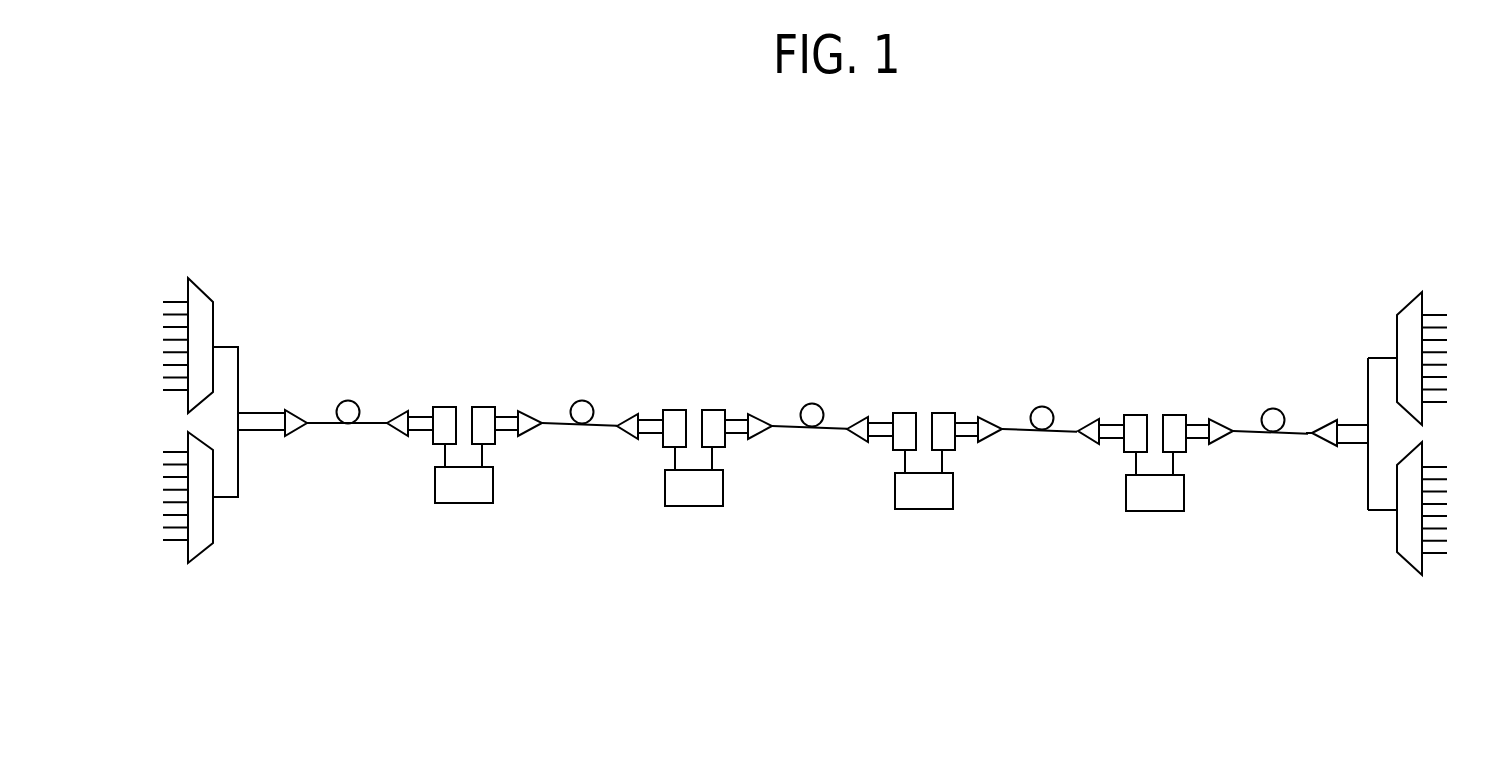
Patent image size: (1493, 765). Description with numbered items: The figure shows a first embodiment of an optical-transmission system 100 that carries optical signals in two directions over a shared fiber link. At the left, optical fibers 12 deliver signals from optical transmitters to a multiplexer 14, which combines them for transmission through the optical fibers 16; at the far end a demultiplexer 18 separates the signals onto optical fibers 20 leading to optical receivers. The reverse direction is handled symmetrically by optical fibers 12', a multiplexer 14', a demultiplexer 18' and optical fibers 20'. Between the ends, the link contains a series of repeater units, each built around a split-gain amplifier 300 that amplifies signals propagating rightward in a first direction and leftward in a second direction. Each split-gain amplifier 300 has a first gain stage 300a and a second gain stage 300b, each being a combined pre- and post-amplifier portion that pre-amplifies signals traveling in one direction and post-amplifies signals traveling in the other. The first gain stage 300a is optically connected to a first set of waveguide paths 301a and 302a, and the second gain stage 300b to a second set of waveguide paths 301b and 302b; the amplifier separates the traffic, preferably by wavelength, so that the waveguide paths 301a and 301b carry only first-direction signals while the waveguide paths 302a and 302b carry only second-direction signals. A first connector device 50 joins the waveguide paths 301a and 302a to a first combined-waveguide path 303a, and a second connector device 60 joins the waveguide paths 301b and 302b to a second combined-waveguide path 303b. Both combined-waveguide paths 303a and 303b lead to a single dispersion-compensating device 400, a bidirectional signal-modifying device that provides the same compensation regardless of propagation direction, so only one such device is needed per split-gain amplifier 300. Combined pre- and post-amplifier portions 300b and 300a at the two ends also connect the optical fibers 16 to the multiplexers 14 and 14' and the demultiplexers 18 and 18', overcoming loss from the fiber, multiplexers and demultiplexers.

The optical-transmission system 100 is at (814, 222).
The optical fiber 12 is at (170, 311).
The multiplexer 14 is at (215, 322).
The optical fiber 16 is at (349, 400).
The demultiplexer 18 is at (1383, 342).
The optical fiber 20 is at (1451, 327).
The optical fiber 12' is at (1439, 551).
The multiplexer 14' is at (1385, 538).
The demultiplexer 18' is at (216, 524).
The optical fiber 20' is at (170, 532).
The split-gain amplifier 300 is at (816, 418).
The first gain stage 300a is at (866, 377).
The second gain stage 300b is at (300, 412).
The waveguide path 301a is at (780, 404).
The waveguide path 301b is at (843, 404).
The waveguide path 302a is at (729, 453).
The waveguide path 302b is at (887, 444).
The first combined-waveguide path 303a is at (767, 493).
The second combined-waveguide path 303b is at (869, 497).
The dispersion-compensating device 400 is at (809, 519).
The first connector device 50 is at (740, 491).
The second connector device 60 is at (863, 471).